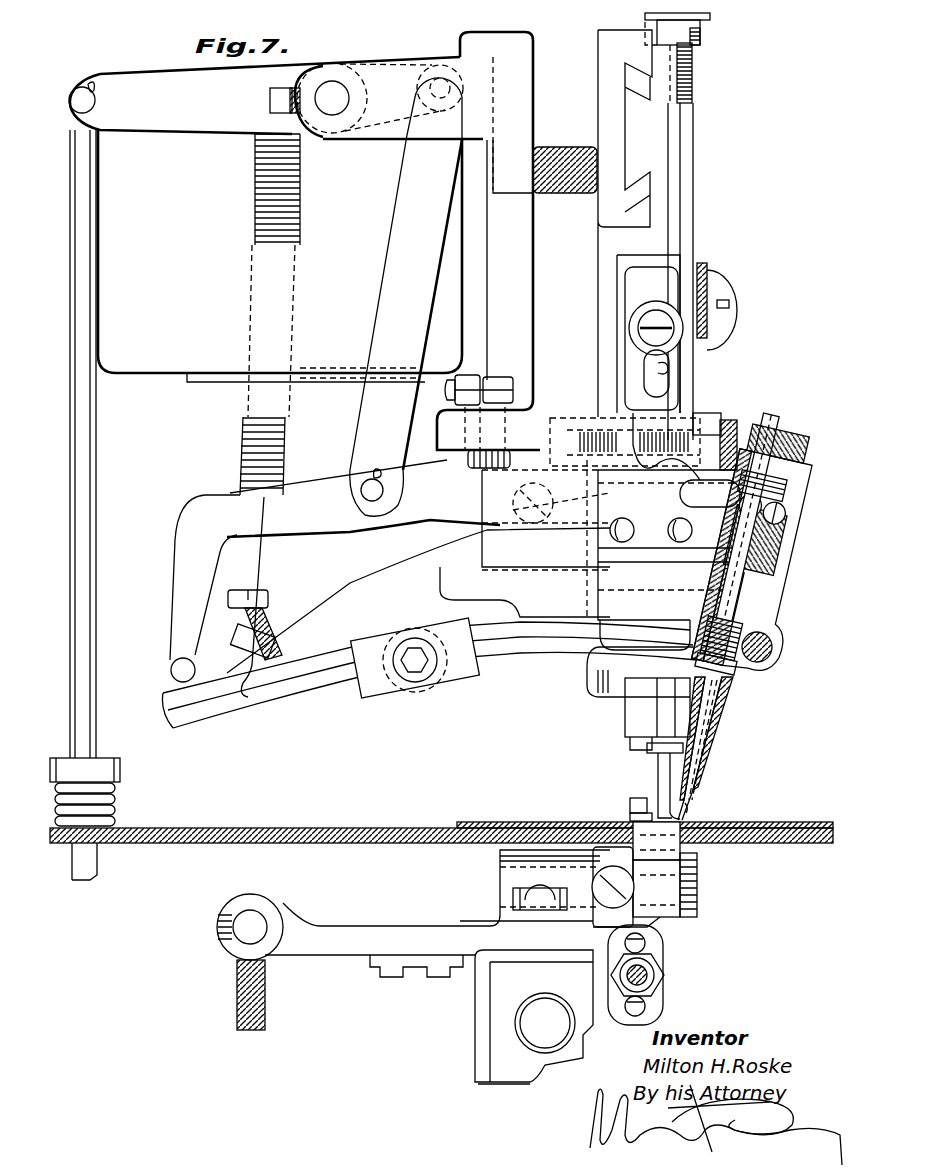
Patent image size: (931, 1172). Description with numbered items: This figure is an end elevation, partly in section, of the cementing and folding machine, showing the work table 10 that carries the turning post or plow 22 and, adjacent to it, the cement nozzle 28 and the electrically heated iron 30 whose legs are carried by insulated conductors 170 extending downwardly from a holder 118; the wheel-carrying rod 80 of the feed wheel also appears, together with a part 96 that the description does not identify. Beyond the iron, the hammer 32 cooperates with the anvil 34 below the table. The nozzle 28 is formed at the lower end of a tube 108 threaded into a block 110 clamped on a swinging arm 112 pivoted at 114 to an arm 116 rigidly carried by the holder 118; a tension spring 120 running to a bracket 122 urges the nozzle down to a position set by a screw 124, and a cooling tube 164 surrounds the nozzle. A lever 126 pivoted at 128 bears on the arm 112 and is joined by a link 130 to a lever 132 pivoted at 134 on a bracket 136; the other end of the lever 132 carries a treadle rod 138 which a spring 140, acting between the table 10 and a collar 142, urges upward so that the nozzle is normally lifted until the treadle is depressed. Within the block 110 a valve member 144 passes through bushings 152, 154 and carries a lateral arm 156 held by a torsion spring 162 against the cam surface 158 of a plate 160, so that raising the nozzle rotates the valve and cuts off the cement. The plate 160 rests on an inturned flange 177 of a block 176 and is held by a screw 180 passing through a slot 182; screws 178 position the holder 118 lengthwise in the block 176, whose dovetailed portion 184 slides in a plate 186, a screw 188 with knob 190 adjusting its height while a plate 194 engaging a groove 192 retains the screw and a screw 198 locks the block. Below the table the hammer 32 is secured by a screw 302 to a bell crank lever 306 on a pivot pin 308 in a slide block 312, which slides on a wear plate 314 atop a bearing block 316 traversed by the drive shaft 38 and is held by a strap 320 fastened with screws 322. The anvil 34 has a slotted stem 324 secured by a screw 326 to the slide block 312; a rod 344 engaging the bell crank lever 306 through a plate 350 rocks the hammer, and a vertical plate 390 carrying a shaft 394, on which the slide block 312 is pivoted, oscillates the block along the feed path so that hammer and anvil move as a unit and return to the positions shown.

The work table 10 is at (222, 830).
The turning post or plow 22 is at (690, 822).
The nozzle 28 is at (692, 806).
The electrically heated iron 30 is at (658, 772).
The hammer 32 is at (630, 806).
The anvil 34 is at (680, 840).
The drive shaft 38 is at (520, 1022).
The wheel-carrying rod 80 is at (472, 466).
The clamp screw 96 is at (513, 380).
The tube 108 is at (700, 742).
The block 110 is at (776, 606).
The swinging arm 112 is at (528, 656).
The pivot 114 is at (413, 672).
The arm 116 is at (370, 577).
The holder 118 is at (598, 684).
The tension spring 120 is at (241, 446).
The bracket 122 is at (309, 70).
The screw 124 is at (252, 602).
The lever 126 is at (176, 586).
The pivot 128 is at (498, 526).
The link 130 is at (380, 318).
The lever 132 is at (366, 66).
The pivot 134 is at (330, 116).
The bracket 136 is at (422, 58).
The rod 138 is at (99, 455).
The spring 140 is at (116, 808).
The collar 142 is at (121, 770).
The valve member 144 is at (770, 580).
The bushing 152 is at (772, 543).
The bushing 154 is at (802, 460).
The arm 156 is at (676, 512).
The cam surface 158 is at (690, 462).
The plate 160 is at (672, 388).
The torsion spring 162 is at (785, 497).
The tube 164 is at (708, 767).
The conductors 170 is at (625, 718).
The block 176 is at (690, 262).
The inturned flange 177 is at (620, 297).
The screws 178 is at (561, 416).
The screw 180 is at (662, 318).
The slot 182 is at (663, 370).
The dovetailed portion 184 is at (668, 215).
The plate 186 is at (676, 182).
The screw 188 is at (692, 82).
The knob 190 is at (704, 38).
The peripheral groove 192 is at (645, 22).
The plate 194 is at (706, 18).
The screw 198 is at (706, 285).
The screw 302 is at (690, 883).
The bell crank lever 306 is at (658, 933).
The pivot pin 308 is at (698, 895).
The slide block 312 is at (412, 934).
The wear plate 314 is at (516, 946).
The bearing block 316 is at (500, 1045).
The strap 320 is at (495, 1082).
The screws 322 is at (430, 975).
The depending stem portion 324 is at (662, 915).
The screw 326 is at (590, 886).
The rod 344 is at (650, 975).
The plate 350 is at (656, 1000).
The vertical plate 390 is at (238, 997).
The shaft 394 is at (256, 910).